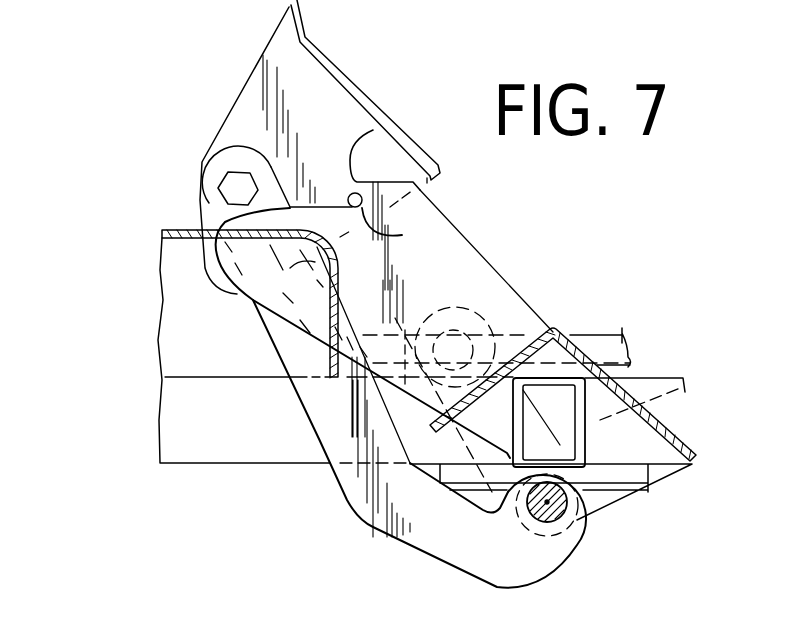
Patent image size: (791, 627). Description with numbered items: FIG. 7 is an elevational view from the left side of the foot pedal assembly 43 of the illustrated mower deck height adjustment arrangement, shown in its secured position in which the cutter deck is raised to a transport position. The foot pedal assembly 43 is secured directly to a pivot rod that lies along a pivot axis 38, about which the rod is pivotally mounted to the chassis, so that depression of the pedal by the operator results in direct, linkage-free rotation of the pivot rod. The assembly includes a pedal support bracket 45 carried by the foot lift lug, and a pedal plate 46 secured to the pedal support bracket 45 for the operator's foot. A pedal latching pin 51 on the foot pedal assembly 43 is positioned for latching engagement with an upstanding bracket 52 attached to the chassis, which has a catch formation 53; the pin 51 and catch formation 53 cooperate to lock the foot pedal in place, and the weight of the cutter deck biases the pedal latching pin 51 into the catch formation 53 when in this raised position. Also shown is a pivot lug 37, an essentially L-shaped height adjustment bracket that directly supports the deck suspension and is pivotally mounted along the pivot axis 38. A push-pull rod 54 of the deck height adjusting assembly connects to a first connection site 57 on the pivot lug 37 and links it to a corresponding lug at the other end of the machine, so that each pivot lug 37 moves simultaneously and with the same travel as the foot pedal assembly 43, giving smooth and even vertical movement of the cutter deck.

The pivot lug 37 is at (607, 502).
The pivot axis 38 is at (547, 503).
The foot pedal assembly 43 is at (173, 187).
The pedal support bracket 45 is at (332, 117).
The pedal plate 46 is at (317, 47).
The pedal latching pin 51 is at (401, 228).
The upstanding bracket 52 is at (478, 278).
The catch formation 53 is at (363, 133).
The push-pull rod 54 is at (605, 345).
The first connection site 57 is at (470, 327).